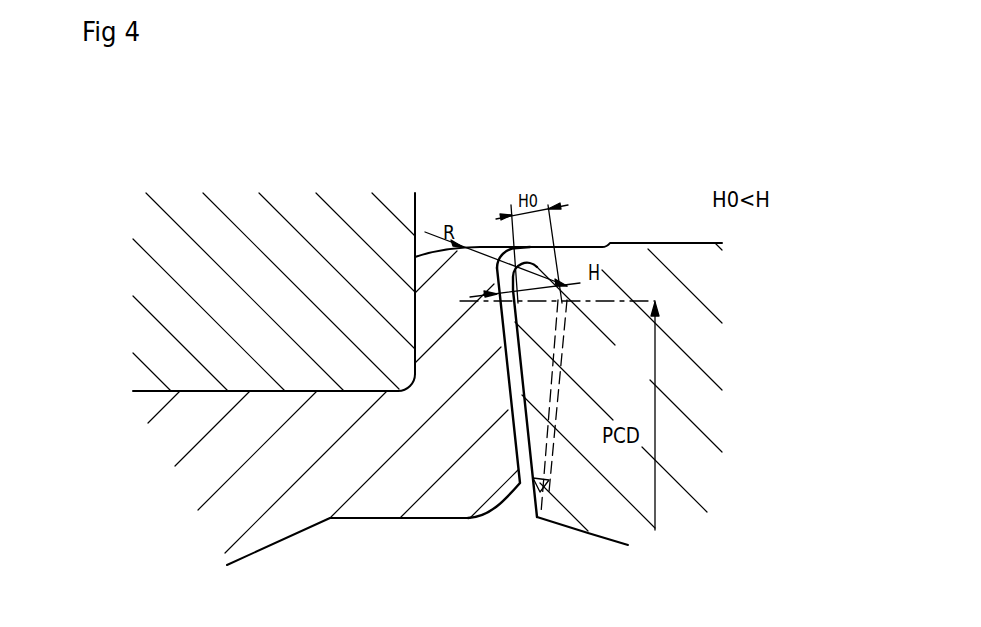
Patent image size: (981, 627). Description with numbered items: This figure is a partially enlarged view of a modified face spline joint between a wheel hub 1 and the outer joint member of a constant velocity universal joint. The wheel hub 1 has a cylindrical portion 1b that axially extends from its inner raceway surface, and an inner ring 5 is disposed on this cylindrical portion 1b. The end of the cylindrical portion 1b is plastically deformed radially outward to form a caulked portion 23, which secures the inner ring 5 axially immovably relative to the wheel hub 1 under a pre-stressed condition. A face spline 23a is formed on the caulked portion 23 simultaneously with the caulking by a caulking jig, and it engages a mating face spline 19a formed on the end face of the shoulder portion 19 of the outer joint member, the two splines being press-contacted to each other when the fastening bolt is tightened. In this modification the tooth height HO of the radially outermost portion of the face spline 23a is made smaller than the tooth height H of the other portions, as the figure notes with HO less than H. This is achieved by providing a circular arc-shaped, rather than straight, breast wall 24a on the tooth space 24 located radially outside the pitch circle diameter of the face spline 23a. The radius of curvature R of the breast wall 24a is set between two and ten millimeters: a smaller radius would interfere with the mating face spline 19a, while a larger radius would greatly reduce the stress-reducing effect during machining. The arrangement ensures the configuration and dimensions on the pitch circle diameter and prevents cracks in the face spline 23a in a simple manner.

The wheel hub 1 is at (170, 440).
The cylindrical portion 1b is at (286, 391).
The inner ring 5 is at (258, 228).
The shoulder portion 19 is at (618, 283).
The face spline 19a is at (522, 487).
The caulked portion 23 is at (415, 337).
The face spline 23a is at (503, 350).
The tooth space 24 is at (520, 425).
The breast wall 24a is at (498, 246).